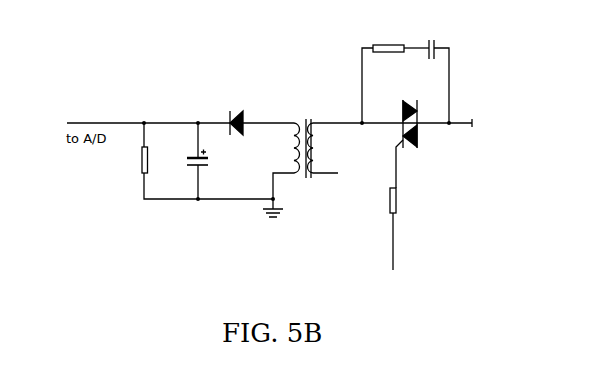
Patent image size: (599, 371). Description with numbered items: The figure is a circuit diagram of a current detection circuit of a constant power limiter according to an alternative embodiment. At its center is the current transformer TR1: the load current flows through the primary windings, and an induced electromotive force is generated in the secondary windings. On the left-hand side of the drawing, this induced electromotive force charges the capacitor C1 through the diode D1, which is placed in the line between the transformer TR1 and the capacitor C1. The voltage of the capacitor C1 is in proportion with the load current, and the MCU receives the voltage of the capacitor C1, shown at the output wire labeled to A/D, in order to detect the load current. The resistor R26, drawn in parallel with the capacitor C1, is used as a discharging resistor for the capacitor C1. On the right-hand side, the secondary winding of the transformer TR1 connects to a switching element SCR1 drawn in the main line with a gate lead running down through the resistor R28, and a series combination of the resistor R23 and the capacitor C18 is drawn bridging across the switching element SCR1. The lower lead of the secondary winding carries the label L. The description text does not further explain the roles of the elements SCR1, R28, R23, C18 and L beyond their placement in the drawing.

The resistor R26 is at (158, 160).
The capacitor C1 is at (204, 157).
The diode D1 is at (232, 117).
The current transformer TR1 is at (305, 148).
The inductor/load L is at (352, 171).
The resistor R23 is at (395, 74).
The capacitor C18 is at (438, 72).
The triac SCR1 is at (412, 132).
The resistor R28 is at (407, 229).